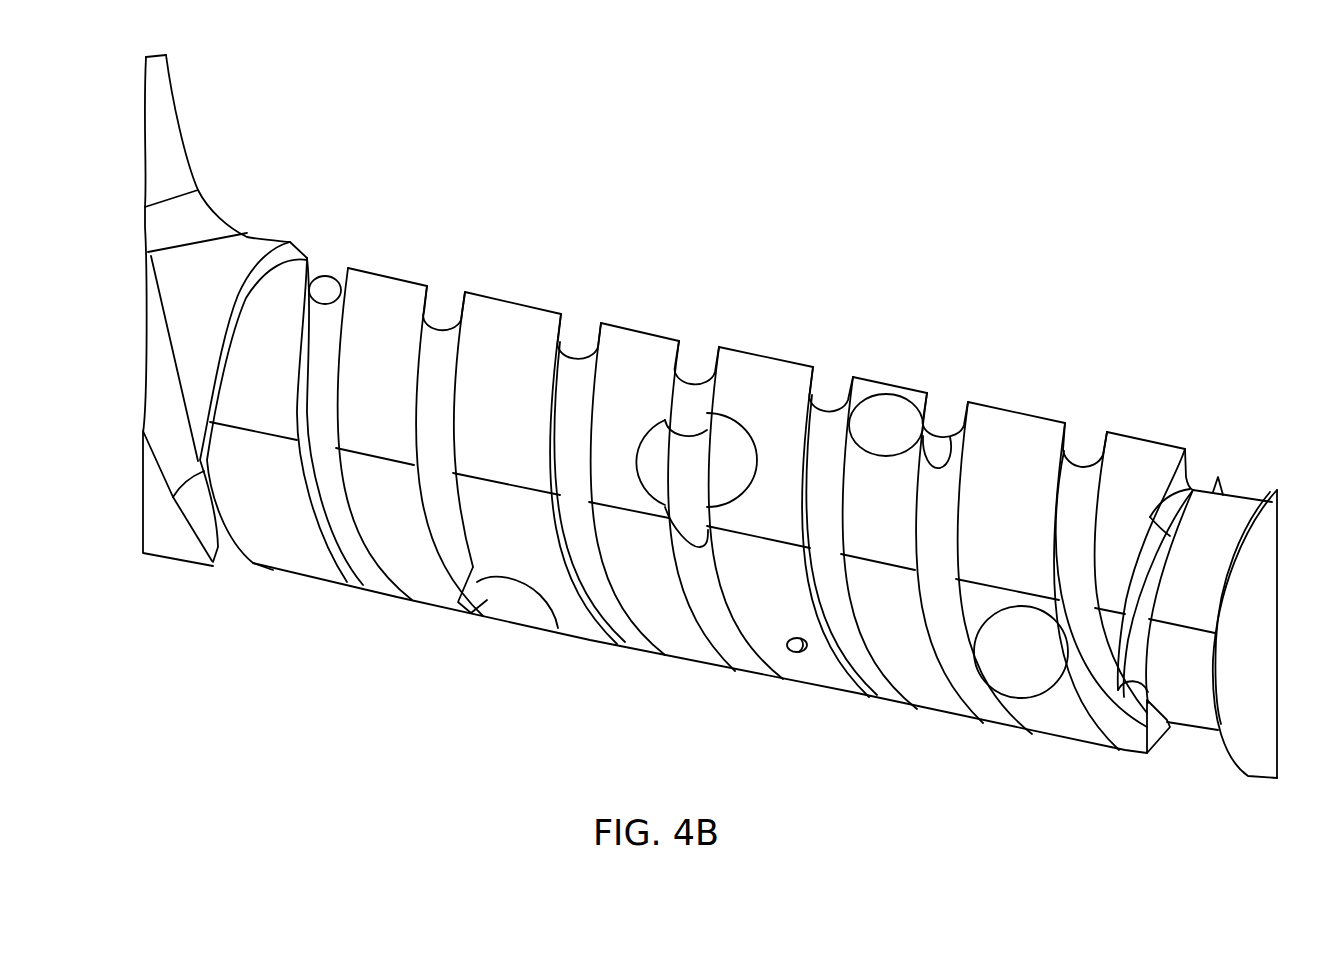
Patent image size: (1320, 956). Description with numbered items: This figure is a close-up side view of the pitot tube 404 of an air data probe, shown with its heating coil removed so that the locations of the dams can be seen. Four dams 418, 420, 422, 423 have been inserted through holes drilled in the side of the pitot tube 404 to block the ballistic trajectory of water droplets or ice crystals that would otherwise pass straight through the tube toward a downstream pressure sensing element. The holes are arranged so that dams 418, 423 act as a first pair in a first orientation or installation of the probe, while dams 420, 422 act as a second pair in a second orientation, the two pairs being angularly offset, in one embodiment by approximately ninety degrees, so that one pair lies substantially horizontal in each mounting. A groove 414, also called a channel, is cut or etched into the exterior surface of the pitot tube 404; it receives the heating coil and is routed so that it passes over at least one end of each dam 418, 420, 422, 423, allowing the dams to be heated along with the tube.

The pitot tube 404 is at (1140, 437).
The groove 414 is at (578, 337).
The dam 418 is at (1036, 667).
The dam 420 is at (900, 407).
The dam 422 is at (727, 447).
The dam 423 is at (529, 610).